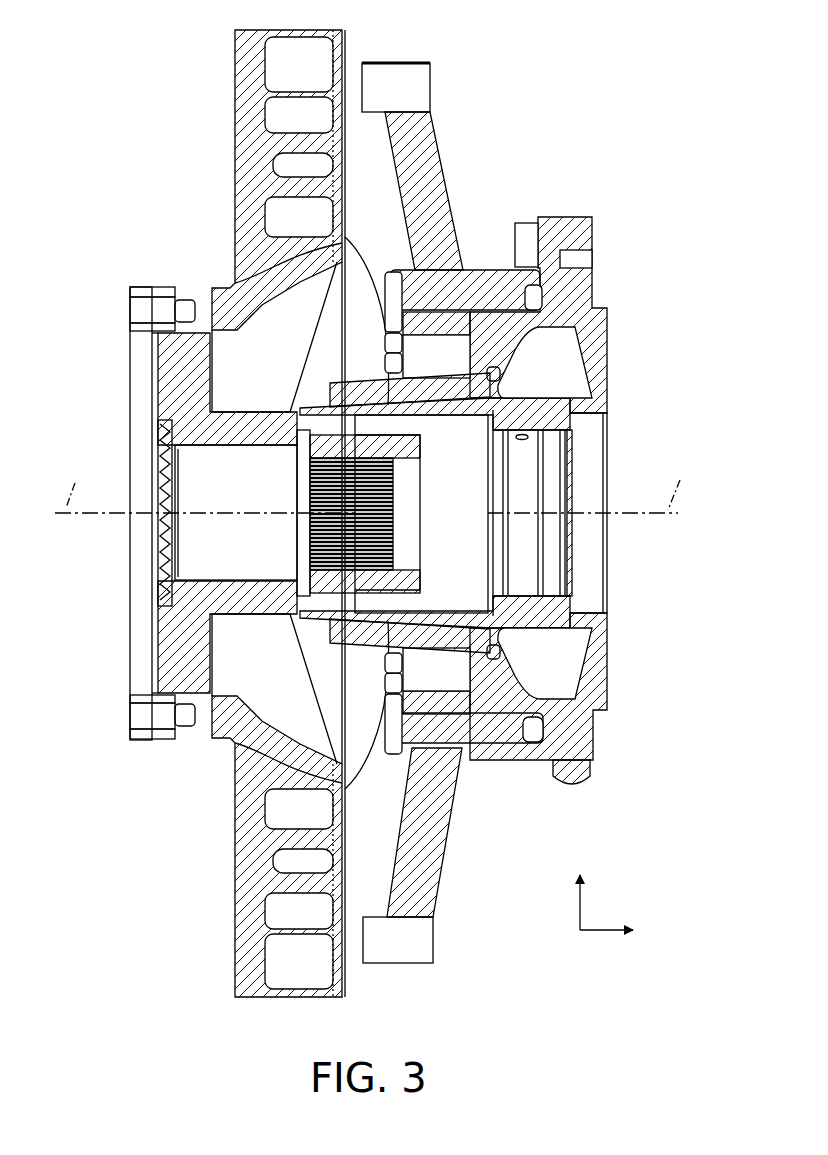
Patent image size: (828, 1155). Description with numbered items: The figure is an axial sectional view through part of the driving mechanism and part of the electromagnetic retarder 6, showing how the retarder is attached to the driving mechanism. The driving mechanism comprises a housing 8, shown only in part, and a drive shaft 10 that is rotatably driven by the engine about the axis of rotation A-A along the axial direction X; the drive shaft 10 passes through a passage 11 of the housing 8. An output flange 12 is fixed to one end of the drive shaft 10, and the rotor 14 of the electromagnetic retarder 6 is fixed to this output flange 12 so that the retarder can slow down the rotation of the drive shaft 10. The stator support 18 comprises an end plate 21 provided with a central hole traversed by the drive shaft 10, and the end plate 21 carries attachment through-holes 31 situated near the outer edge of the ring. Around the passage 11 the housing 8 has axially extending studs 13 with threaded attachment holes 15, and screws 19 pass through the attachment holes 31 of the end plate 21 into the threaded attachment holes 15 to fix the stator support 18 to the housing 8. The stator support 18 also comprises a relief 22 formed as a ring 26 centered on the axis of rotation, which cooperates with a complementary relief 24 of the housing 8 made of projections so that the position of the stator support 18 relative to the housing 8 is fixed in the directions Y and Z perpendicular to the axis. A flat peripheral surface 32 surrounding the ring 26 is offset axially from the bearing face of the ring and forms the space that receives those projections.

The electromagnetic retarder 6 is at (173, 968).
The housing 8 is at (570, 295).
The drive shaft 10 is at (590, 540).
The passage 11 is at (452, 615).
The output flange 12 is at (165, 545).
The studs 13 is at (520, 272).
The rotor 14 is at (252, 78).
The threaded attachment holes 15 is at (568, 332).
The stator support 18 is at (440, 147).
The screws 19 is at (402, 297).
The end plate 21 is at (400, 168).
The relief 22 is at (508, 487).
The complementary relief 24 is at (470, 280).
The ring 26 is at (510, 280).
The attachment holes 31 is at (523, 310).
The peripheral surface 32 is at (440, 283).